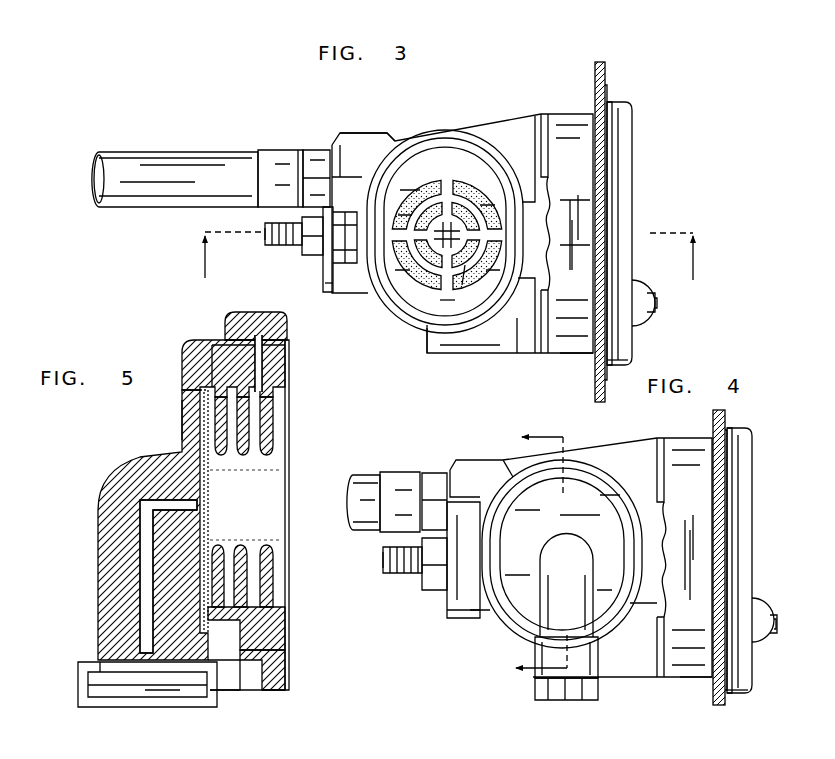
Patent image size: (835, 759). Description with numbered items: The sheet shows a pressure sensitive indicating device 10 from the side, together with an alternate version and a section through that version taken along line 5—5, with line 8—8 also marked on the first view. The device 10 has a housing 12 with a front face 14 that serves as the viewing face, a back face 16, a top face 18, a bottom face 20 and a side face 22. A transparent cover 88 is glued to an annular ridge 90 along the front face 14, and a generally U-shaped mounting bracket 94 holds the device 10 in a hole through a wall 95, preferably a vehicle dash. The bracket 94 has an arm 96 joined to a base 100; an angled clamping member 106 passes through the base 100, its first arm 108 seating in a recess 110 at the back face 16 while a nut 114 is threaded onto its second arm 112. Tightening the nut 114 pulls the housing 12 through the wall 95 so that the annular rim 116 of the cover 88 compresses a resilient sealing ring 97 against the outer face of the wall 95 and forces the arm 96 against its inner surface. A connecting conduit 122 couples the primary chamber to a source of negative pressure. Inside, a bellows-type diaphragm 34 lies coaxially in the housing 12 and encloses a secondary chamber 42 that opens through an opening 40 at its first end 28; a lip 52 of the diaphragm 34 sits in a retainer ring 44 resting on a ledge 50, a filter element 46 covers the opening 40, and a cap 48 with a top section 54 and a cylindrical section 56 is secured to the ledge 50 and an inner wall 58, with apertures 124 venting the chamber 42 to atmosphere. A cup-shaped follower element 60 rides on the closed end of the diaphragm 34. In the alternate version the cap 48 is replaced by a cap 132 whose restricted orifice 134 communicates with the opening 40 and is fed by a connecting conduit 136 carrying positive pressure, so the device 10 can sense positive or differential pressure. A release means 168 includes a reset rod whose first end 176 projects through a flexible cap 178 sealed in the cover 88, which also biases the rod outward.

In FIG. 3, the pressure sensitive indicating device 10 is at (462, 186).
In FIG. 4, the pressure sensitive indicating device 10 is at (581, 537).
In FIG. 3, the housing 12 is at (447, 135).
In FIG. 4, the housing 12 is at (581, 462).
In FIG. 3, the front face 14 is at (618, 110).
In FIG. 4, the front face 14 is at (740, 430).
In FIG. 3, the back face 16 is at (330, 143).
In FIG. 4, the back face 16 is at (450, 468).
In FIG. 5, the top face 18 is at (255, 318).
In FIG. 3, the bottom face 20 is at (425, 328).
In FIG. 5, the bottom face 20 is at (265, 697).
In FIG. 4, the bottom face 20 is at (534, 650).
In FIG. 3, the side face 22 is at (470, 148).
In FIG. 5, the side face 22 is at (226, 320).
In FIG. 4, the side face 22 is at (594, 476).
In FIG. 5, the first end 28 is at (262, 628).
In FIG. 5, the diaphragm 34 is at (290, 436).
In FIG. 5, the opening 40 is at (180, 455).
In FIG. 5, the secondary chamber 42 is at (274, 514).
In FIG. 5, the retainer ring 44 is at (263, 378).
In FIG. 3, the filter element 46 is at (428, 288).
In FIG. 5, the filter element 46 is at (200, 395).
In FIG. 3, the cap 48 is at (420, 170).
In FIG. 5, the ledge 50 is at (247, 665).
In FIG. 5, the lip 52 is at (195, 368).
In FIG. 3, the top section 54 is at (405, 290).
In FIG. 3, the cylindrical section 56 is at (492, 173).
In FIG. 3, the inner wall 58 is at (457, 308).
In FIG. 5, the inner wall 58 is at (232, 332).
In FIG. 5, the follower element 60 is at (290, 640).
In FIG. 3, the transparent cover 88 is at (634, 143).
In FIG. 4, the transparent cover 88 is at (748, 470).
In FIG. 3, the annular ridge 90 is at (587, 352).
In FIG. 4, the annular ridge 90 is at (705, 680).
In FIG. 3, the mounting bracket 94 is at (325, 283).
In FIG. 4, the mounting bracket 94 is at (446, 619).
In FIG. 3, the wall 95 is at (601, 72).
In FIG. 4, the wall 95 is at (715, 415).
In FIG. 3, the arm 96 is at (580, 258).
In FIG. 4, the arm 96 is at (700, 543).
In FIG. 3, the resilient sealing ring 97 is at (606, 97).
In FIG. 4, the resilient sealing ring 97 is at (728, 427).
In FIG. 3, the base 100 is at (327, 268).
In FIG. 4, the base 100 is at (447, 600).
In FIG. 3, the clamping member 106 is at (283, 252).
In FIG. 4, the clamping member 106 is at (385, 576).
In FIG. 3, the first arm 108 is at (352, 264).
In FIG. 3, the recess 110 is at (348, 215).
In FIG. 3, the second arm 112 is at (265, 223).
In FIG. 4, the second arm 112 is at (383, 560).
In FIG. 3, the nut 114 is at (305, 243).
In FIG. 4, the nut 114 is at (425, 580).
In FIG. 3, the annular rim 116 is at (622, 363).
In FIG. 4, the annular rim 116 is at (743, 695).
In FIG. 3, the connecting conduit 122 is at (125, 162).
In FIG. 4, the connecting conduit 122 is at (363, 480).
In FIG. 3, the apertures 124 is at (471, 275).
In FIG. 5, the cap 132 is at (180, 420).
In FIG. 4, the cap 132 is at (595, 512).
In FIG. 5, the restricted orifice 134 is at (148, 586).
In FIG. 5, the connecting conduit 136 is at (112, 690).
In FIG. 4, the connecting conduit 136 is at (537, 695).
In FIG. 3, the release means 168 is at (660, 305).
In FIG. 4, the release means 168 is at (759, 592).
In FIG. 3, the first end 176 is at (656, 308).
In FIG. 4, the first end 176 is at (779, 620).
In FIG. 3, the flexible cap 178 is at (646, 288).
In FIG. 4, the flexible cap 178 is at (762, 644).
In FIG. 3, the section line 8- 8 is at (444, 256).
In FIG. 4, the section line 5- 5 is at (527, 558).